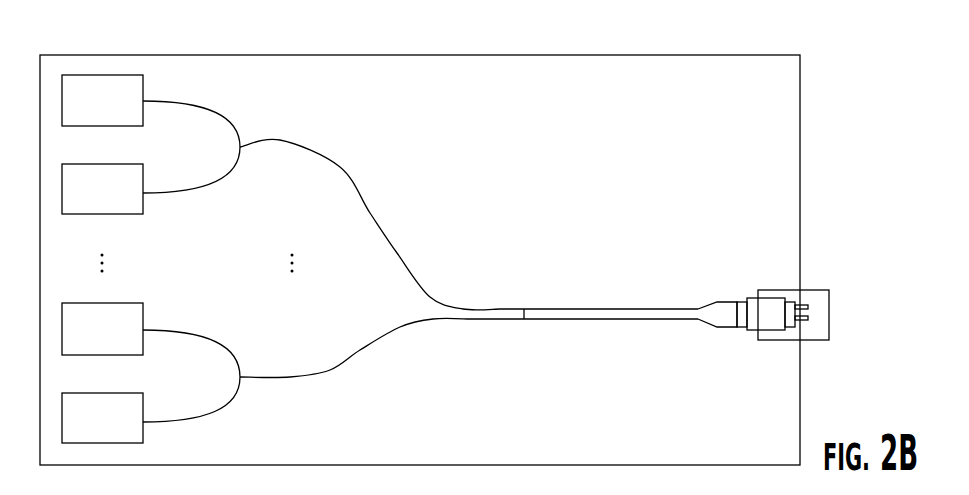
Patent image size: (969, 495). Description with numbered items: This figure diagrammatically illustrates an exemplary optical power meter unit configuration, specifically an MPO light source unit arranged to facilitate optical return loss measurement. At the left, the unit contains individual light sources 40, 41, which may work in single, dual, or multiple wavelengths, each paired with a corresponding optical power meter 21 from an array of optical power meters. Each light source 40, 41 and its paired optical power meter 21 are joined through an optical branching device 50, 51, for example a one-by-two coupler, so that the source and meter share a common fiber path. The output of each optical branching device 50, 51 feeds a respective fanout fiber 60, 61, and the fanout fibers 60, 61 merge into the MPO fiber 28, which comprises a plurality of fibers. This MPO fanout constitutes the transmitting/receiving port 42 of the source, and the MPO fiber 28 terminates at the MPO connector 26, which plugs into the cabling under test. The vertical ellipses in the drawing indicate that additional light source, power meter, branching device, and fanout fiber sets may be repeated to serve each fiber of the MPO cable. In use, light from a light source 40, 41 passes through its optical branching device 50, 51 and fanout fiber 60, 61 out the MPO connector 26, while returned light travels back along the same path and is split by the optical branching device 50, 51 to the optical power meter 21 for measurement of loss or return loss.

The optical power meter 21 is at (143, 82).
The MPO connector 26 is at (767, 307).
The MPO fiber 28 is at (593, 310).
The light source 40 is at (130, 214).
The light source 41 is at (143, 435).
The transmitting/receiving port 42 is at (817, 340).
The optical branching device 50 is at (223, 117).
The optical branching device 51 is at (223, 350).
The fanout fiber 60 is at (367, 215).
The fanout fiber 61 is at (367, 355).